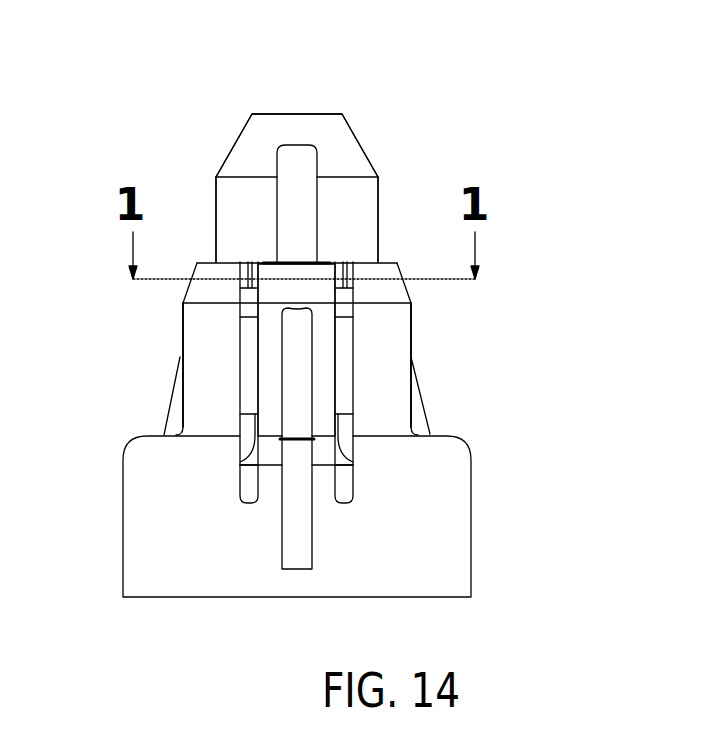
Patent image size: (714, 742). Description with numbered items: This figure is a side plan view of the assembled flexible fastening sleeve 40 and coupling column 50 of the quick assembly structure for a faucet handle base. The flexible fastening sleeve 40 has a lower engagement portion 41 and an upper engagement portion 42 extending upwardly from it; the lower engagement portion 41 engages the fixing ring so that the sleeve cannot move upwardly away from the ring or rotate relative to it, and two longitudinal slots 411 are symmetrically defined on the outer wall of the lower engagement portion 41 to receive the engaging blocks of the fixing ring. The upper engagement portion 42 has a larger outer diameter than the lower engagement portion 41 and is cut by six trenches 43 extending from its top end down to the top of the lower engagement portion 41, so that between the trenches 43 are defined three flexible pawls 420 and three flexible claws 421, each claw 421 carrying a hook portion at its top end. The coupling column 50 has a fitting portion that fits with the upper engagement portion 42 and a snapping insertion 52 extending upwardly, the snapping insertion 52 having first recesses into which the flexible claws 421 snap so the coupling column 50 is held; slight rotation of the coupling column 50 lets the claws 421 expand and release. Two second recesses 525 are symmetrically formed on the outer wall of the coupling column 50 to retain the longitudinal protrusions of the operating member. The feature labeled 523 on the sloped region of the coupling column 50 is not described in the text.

The flexible fastening sleeve 40 is at (424, 348).
The lower engagement portion 41 is at (471, 520).
The longitudinal slot 411 is at (298, 557).
The upper engagement portion 42 is at (411, 322).
The flexible pawl 420 is at (195, 330).
The flexible claw 421 is at (268, 395).
The trench 43 is at (248, 360).
The coupling column 50 is at (392, 190).
The snapping insertion 52 is at (215, 198).
The inclined surface 523 is at (345, 145).
The second recess 525 is at (299, 157).